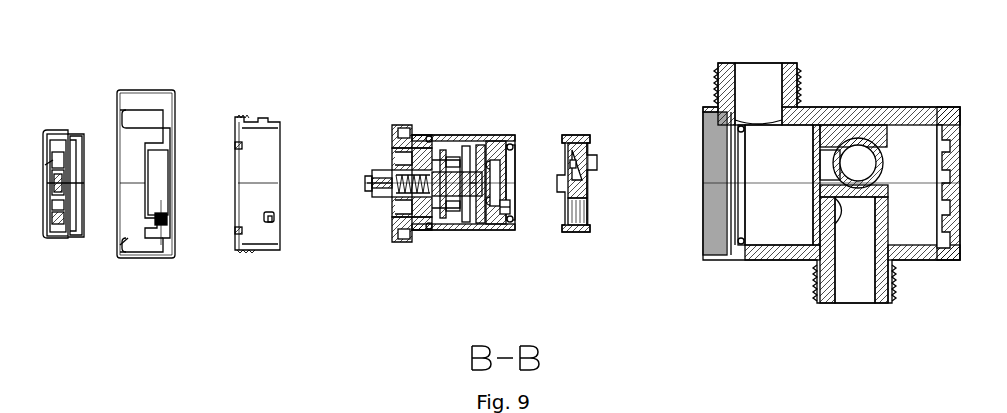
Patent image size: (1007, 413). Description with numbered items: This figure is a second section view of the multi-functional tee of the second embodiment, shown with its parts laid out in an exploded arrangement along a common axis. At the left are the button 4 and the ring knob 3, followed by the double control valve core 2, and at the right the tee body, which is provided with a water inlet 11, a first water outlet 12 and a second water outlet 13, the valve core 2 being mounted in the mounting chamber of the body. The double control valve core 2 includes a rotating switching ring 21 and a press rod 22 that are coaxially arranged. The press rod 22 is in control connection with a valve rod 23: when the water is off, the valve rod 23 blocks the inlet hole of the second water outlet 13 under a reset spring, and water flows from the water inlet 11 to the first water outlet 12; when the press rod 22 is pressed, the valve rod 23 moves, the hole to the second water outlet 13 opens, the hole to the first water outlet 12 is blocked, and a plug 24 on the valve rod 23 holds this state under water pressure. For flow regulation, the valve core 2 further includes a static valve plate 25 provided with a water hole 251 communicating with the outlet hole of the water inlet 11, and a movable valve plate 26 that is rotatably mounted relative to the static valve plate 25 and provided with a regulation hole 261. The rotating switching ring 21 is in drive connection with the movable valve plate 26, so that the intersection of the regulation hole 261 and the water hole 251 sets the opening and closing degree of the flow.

The double control valve core 2 is at (452, 147).
The ring knob 3 is at (140, 95).
The button 4 is at (52, 130).
The water inlet 11 is at (853, 281).
The first water outlet 12 is at (858, 162).
The second water outlet 13 is at (762, 84).
The rotating switching ring 21 is at (398, 152).
The press rod 22 is at (366, 187).
The valve rod 23 is at (471, 186).
The plug 24 is at (488, 186).
The static valve plate 25 is at (599, 154).
The movable valve plate 26 is at (500, 134).
The water hole 251 is at (592, 213).
The regulation hole 261 is at (512, 210).